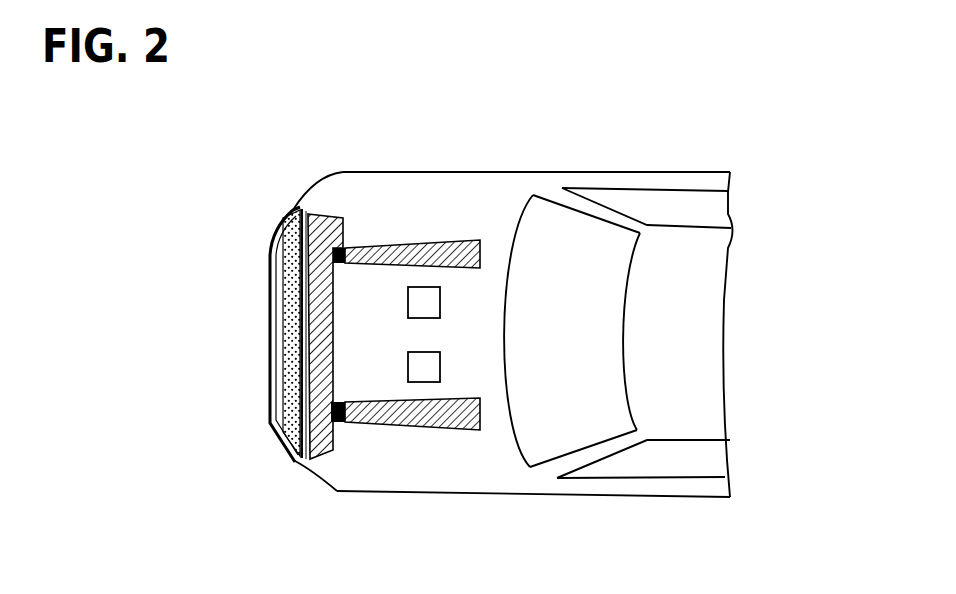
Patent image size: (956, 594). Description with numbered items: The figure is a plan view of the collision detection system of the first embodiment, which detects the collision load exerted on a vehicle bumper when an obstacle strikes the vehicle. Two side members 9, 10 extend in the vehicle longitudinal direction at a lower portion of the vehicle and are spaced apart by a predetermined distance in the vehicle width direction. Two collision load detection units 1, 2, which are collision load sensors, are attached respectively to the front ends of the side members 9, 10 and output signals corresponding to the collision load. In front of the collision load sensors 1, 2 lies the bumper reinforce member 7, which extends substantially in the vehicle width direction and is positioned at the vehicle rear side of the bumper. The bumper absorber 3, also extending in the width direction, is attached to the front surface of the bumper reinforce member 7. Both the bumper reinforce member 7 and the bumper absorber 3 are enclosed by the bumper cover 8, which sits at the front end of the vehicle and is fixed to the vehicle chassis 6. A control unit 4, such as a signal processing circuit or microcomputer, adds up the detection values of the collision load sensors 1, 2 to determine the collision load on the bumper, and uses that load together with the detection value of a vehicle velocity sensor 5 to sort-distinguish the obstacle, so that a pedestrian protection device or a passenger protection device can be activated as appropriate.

The collision load detection unit 1 is at (338, 425).
The collision load detection unit 2 is at (328, 210).
The bumper absorber 3 is at (283, 397).
The control unit 4 is at (425, 306).
The vehicle velocity sensor 5 is at (425, 371).
The vehicle chassis 6 is at (487, 188).
The bumper reinforce member 7 is at (328, 455).
The bumper cover 8 is at (314, 472).
The side member 9 is at (433, 428).
The side member 10 is at (377, 248).